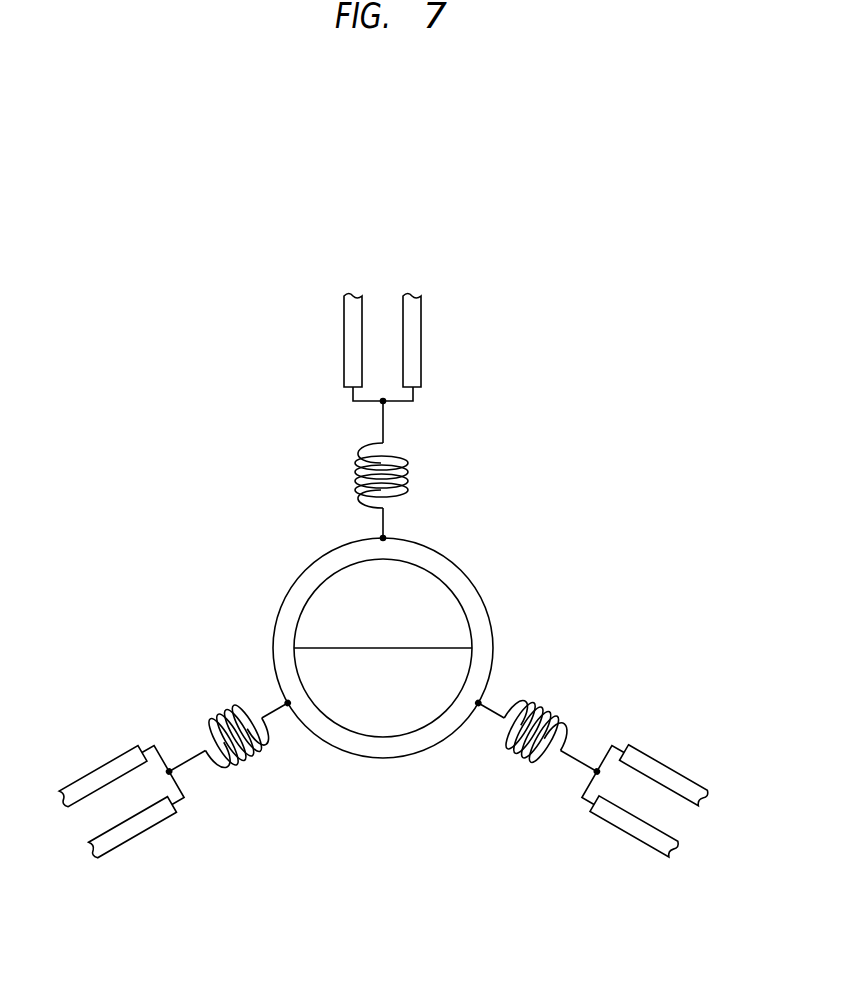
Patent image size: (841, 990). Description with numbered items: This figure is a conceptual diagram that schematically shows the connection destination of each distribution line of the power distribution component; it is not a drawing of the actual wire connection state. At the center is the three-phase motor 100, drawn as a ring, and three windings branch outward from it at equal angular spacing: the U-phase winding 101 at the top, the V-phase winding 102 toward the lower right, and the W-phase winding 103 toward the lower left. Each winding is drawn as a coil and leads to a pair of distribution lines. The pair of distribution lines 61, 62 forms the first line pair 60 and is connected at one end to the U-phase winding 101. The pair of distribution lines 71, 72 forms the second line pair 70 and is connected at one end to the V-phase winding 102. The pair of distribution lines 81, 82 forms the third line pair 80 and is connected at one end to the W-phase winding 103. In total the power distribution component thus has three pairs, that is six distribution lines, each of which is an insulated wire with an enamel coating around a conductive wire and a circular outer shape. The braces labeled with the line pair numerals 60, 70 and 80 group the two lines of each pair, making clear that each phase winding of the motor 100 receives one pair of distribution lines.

The three-phase motor 100 is at (272, 563).
The U-phase winding 101 is at (408, 468).
The V-phase winding 102 is at (517, 752).
The W-phase winding 103 is at (247, 762).
The first line pair 60 is at (381, 326).
The distribution line 61 is at (344, 334).
The distribution line 62 is at (422, 334).
The second line pair 70 is at (661, 819).
The distribution line 71 is at (677, 768).
The distribution line 72 is at (642, 845).
The third line pair 80 is at (104, 819).
The distribution line 81 is at (78, 778).
The distribution line 82 is at (117, 848).